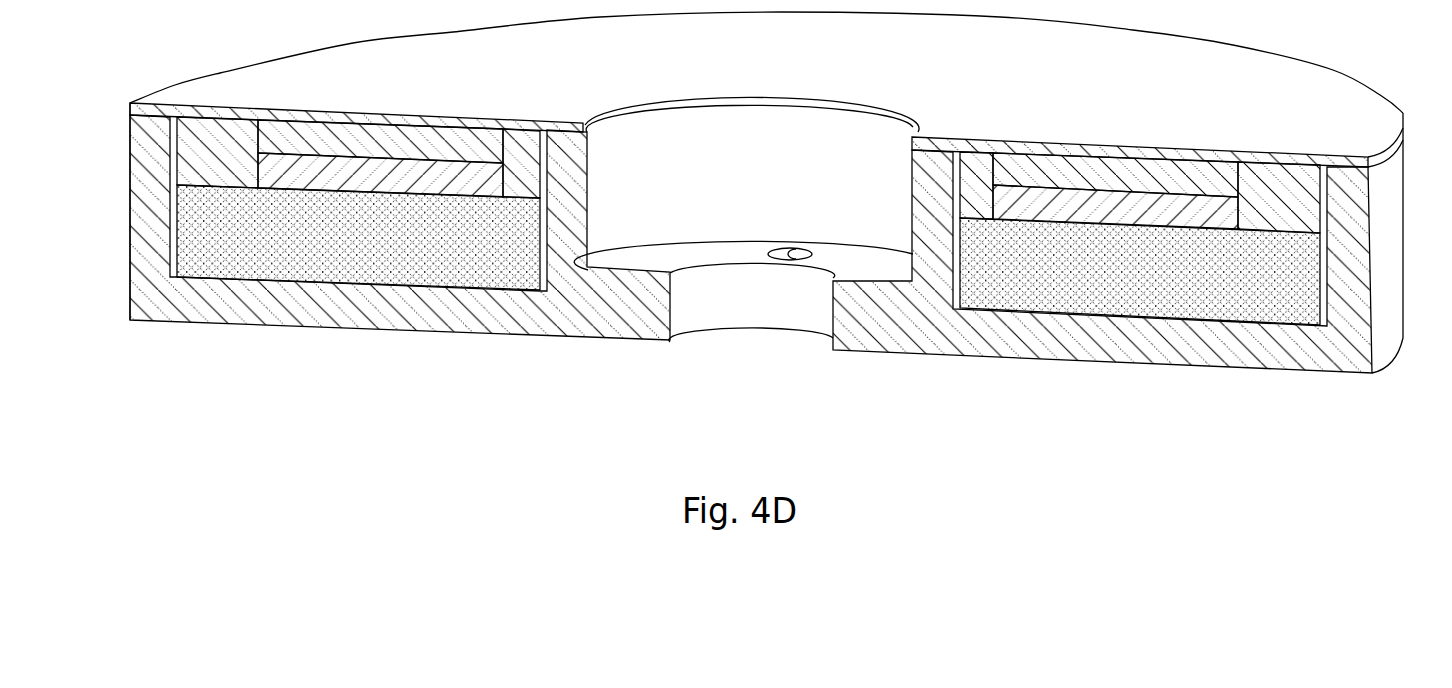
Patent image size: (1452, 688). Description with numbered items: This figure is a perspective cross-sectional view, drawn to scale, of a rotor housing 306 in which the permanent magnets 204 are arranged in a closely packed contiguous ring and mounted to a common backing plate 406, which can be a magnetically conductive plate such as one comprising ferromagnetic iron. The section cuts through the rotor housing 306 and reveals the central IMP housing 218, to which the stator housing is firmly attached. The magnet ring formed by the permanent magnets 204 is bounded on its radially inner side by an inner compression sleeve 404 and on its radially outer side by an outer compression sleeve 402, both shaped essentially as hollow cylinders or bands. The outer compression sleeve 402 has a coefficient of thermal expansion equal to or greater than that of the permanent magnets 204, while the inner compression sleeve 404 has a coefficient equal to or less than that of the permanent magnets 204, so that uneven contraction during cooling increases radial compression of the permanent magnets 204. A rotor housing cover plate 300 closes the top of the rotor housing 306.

The rotor housing cover plate 300 is at (623, 76).
The rotor housing 306 is at (933, 333).
The IMP housing 218 is at (777, 195).
The inner compression sleeve 404 is at (980, 162).
The permanent magnets 204 is at (1147, 200).
The outer compression sleeve 402 is at (1287, 190).
The backing plate 406 is at (1193, 283).